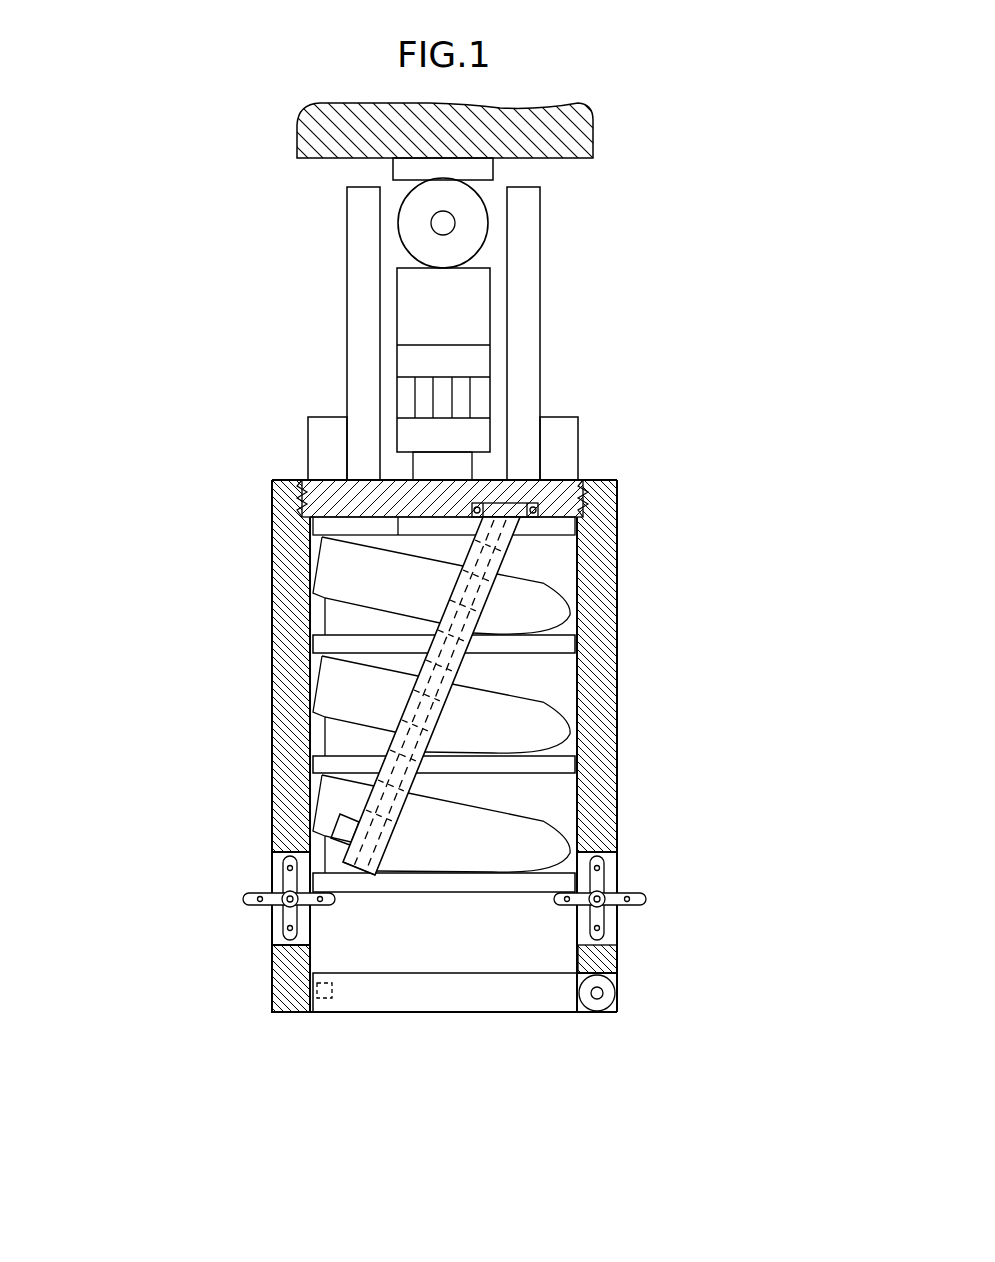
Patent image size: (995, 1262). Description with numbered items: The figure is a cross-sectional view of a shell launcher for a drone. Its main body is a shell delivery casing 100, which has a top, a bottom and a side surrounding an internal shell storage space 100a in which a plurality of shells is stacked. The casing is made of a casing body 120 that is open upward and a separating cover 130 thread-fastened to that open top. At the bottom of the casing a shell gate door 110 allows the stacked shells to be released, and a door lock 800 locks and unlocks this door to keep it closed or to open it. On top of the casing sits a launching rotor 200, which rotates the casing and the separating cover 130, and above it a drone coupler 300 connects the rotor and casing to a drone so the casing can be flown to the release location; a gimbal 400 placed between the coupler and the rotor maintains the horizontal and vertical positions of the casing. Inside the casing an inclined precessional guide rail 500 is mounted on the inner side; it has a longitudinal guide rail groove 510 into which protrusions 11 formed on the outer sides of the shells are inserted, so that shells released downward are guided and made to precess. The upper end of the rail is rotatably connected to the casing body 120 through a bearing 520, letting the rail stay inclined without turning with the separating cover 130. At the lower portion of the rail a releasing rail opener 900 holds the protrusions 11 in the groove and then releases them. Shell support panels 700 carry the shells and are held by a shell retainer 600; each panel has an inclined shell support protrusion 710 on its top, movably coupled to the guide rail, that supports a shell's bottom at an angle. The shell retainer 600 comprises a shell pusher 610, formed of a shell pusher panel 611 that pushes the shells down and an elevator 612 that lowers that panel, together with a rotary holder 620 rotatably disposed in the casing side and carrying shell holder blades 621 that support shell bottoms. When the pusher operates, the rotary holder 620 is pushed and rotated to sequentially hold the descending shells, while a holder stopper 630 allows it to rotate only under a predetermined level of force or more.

The drone coupler 300 is at (475, 168).
The gimbal 400 is at (473, 245).
The launching rotor 200 is at (443, 418).
The shell pusher 610 is at (337, 361).
The elevator 612 is at (362, 380).
The shell pusher panel 611 is at (378, 525).
The shell retainer 600 is at (360, 940).
The separating cover 130 is at (305, 497).
The casing body 120 is at (272, 573).
The shell delivery casing 100 is at (428, 746).
The shell storage space 100a is at (308, 727).
The shell gate door 110 is at (524, 998).
The shell support panel 700 is at (558, 885).
The shell support protrusion 710 is at (268, 663).
The releasing rail opener 900 is at (332, 818).
The precessional guide rail 500 is at (463, 793).
The protrusion 11 is at (473, 598).
The guide rail groove 510 is at (364, 866).
The bearing 520 is at (535, 506).
The rotary holder 620 is at (278, 905).
The shell holder blade 621 is at (290, 874).
The holder stopper 630 is at (238, 981).
The door lock 800 is at (317, 995).